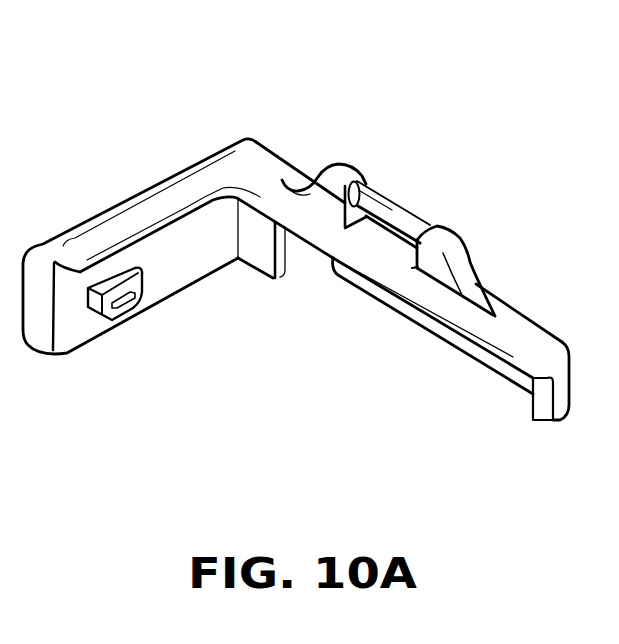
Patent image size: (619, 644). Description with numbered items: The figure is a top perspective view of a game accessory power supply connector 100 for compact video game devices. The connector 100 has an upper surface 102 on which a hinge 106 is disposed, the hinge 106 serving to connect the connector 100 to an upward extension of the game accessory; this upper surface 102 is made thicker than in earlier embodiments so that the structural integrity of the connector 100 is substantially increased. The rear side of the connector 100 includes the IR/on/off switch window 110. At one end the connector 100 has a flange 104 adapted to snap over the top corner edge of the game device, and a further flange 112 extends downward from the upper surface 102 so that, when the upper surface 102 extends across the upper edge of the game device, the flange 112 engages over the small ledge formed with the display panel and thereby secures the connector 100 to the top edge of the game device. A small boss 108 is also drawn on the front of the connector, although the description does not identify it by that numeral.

The game accessory power supply connector 100 is at (99, 130).
The upper surface 102 is at (264, 160).
The flange 104 is at (543, 413).
The hinge 106 is at (392, 200).
The connector boss 108 is at (120, 305).
The IR/on/off switch window 110 is at (307, 255).
The flange 112 is at (447, 323).